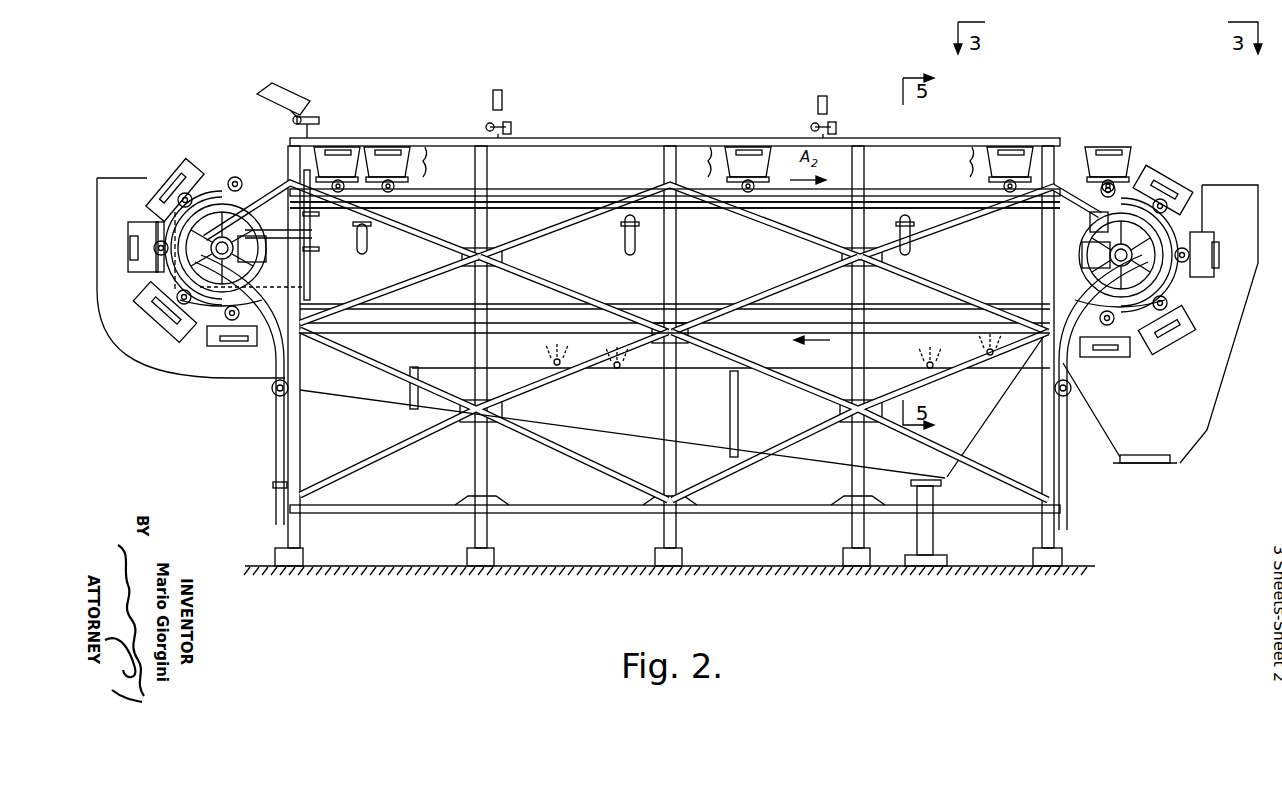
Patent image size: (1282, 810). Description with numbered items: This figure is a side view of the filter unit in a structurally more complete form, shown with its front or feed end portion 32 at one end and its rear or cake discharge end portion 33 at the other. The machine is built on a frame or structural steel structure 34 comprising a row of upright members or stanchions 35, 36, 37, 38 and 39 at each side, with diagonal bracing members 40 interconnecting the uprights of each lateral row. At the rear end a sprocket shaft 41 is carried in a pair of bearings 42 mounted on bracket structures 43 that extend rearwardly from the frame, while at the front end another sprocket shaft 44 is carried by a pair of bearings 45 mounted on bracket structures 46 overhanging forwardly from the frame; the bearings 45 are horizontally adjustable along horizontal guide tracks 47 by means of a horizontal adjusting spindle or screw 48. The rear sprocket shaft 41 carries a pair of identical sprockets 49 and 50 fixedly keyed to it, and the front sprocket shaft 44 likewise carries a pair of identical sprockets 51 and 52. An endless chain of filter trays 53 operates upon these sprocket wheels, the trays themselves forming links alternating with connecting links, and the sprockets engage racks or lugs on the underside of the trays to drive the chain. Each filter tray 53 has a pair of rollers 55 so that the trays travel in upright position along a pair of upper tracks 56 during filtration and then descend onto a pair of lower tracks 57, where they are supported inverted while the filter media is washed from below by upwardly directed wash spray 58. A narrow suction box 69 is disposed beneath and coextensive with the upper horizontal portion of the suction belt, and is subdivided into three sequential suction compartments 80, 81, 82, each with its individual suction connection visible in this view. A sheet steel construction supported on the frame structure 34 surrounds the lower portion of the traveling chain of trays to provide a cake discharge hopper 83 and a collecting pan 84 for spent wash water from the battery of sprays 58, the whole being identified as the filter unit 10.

The front or feed end portion 32 is at (176, 131).
The rear or cake discharge end portion 33 is at (1157, 147).
The frame or structural steel structure 34 is at (456, 524).
The upright member or stanchion 35 is at (302, 428).
The upright member or stanchion 36 is at (489, 462).
The upright member or stanchion 37 is at (662, 460).
The upright member or stanchion 38 is at (850, 487).
The upright member or stanchion 39 is at (1040, 442).
The diagonal bracing members 40 is at (548, 232).
The sprocket shaft 41 is at (1085, 256).
The bearings 42 is at (1168, 226).
The bracket structures 43 is at (1096, 224).
The sprocket shaft 44 is at (266, 258).
The bearings 45 is at (165, 232).
The bracket structures 46 is at (221, 222).
The horizontal guide tracks 47 is at (252, 234).
The horizontal adjusting spindle or screw 48 is at (243, 246).
The sprocket 49 is at (1062, 291).
The sprocket 50 is at (1062, 272).
The sprocket 51 is at (262, 299).
The sprocket 52 is at (305, 287).
The filter trays 53 is at (345, 160).
The rollers 55 is at (390, 168).
The upper tracks 56 is at (438, 205).
The lower tracks 57 is at (452, 333).
The wash spray 58 is at (563, 358).
The suction box 69 is at (700, 216).
The suction compartment 80 is at (370, 246).
The suction compartment 81 is at (620, 245).
The suction compartment 82 is at (918, 257).
The cake discharge hopper 83 is at (1190, 428).
The collecting pan 84 is at (780, 470).
The conveyor apparatus 10 is at (926, 266).